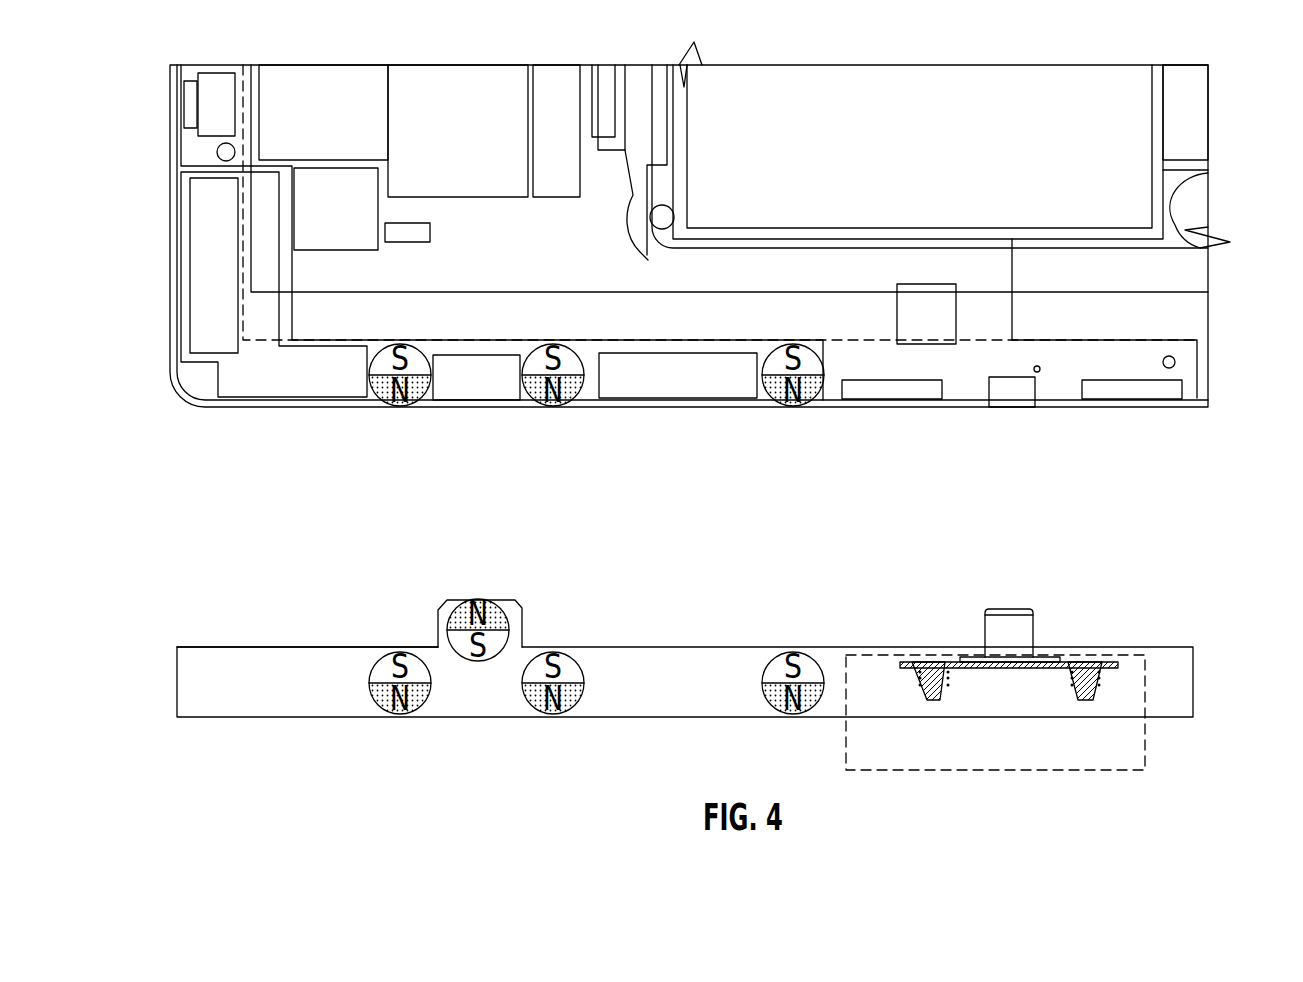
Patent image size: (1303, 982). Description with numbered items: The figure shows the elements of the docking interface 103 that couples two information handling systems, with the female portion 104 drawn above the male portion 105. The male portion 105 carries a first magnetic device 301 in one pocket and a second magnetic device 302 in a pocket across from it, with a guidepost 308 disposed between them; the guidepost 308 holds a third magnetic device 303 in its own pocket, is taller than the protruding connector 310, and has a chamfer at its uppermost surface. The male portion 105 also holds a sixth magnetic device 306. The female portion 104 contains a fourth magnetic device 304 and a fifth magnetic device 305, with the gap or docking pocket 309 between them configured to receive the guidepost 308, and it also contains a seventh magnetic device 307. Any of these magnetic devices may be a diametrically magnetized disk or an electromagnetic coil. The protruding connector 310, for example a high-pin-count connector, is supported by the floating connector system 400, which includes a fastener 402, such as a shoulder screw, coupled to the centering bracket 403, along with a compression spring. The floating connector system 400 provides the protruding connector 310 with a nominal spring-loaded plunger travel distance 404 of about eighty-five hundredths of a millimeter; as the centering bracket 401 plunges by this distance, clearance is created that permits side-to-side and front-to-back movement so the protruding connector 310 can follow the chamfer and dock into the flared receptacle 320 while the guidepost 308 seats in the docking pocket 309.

The docking interface 103 is at (1226, 549).
The female portion 104 is at (1197, 370).
The male portion 105 is at (248, 647).
The first magnetic device 301 is at (400, 648).
The second magnetic device 302 is at (553, 648).
The third magnetic device 303 is at (497, 603).
The fourth magnetic device 304 is at (388, 407).
The fifth magnetic device 305 is at (567, 407).
The sixth magnetic device 306 is at (793, 648).
The seventh magnetic device 307 is at (793, 407).
The guidepost 308 is at (467, 594).
The docking pocket 309 is at (482, 414).
The protruding connector 310 is at (1013, 601).
The flared receptacle 320 is at (1024, 429).
The floating connector system 400 is at (862, 737).
The centering bracket 401 is at (1118, 666).
The fastener 402 is at (1100, 687).
The centering bracket 403 is at (1114, 677).
The spring-loaded plunger travel distance 404 is at (934, 629).